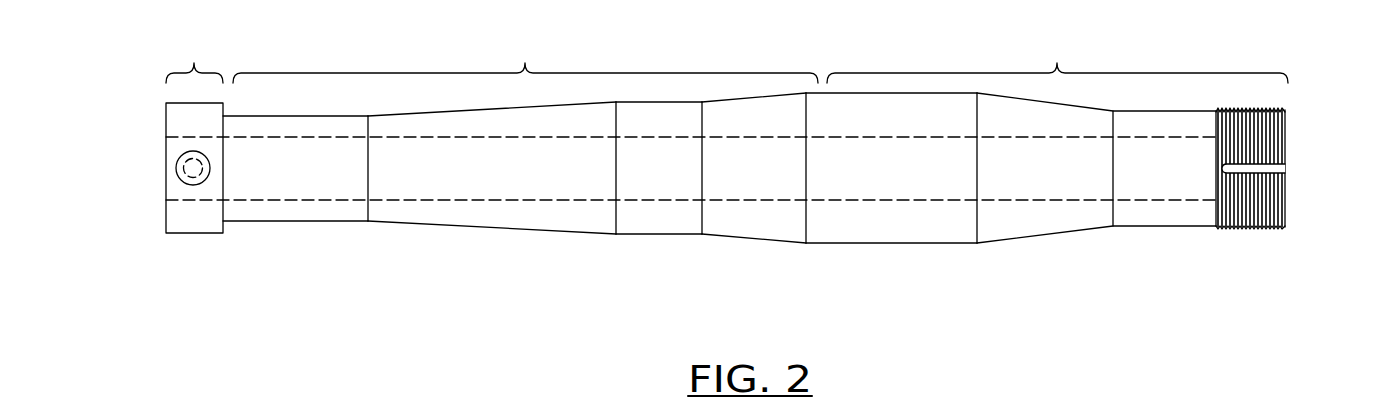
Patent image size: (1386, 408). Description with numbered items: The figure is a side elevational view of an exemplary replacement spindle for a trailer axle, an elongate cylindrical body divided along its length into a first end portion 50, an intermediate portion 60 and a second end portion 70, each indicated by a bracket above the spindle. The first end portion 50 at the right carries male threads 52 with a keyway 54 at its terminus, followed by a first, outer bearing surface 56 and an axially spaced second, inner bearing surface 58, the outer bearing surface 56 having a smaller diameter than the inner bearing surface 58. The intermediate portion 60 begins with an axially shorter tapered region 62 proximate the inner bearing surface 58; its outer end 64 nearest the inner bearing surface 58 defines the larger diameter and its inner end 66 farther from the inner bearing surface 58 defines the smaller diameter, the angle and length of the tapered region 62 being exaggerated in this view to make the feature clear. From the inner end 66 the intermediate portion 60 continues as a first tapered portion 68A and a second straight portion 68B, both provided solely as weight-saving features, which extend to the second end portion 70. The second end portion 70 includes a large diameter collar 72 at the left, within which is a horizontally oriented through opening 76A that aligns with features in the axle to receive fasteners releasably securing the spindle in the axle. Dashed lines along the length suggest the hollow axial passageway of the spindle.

The first end portion 50 is at (1057, 57).
The male threads 52 is at (1255, 222).
The keyway 54 is at (1270, 168).
The outer bearing surface 56 is at (1160, 226).
The inner bearing surface 58 is at (927, 243).
The intermediate portion 60 is at (525, 57).
The tapered region 62 is at (760, 239).
The outer end 64 is at (806, 243).
The inner end 66 is at (702, 234).
The first tapered portion 68A is at (522, 229).
The second straight portion 68B is at (303, 222).
The second end portion 70 is at (194, 57).
The large diameter collar 72 is at (196, 233).
The through opening 76A is at (176, 168).